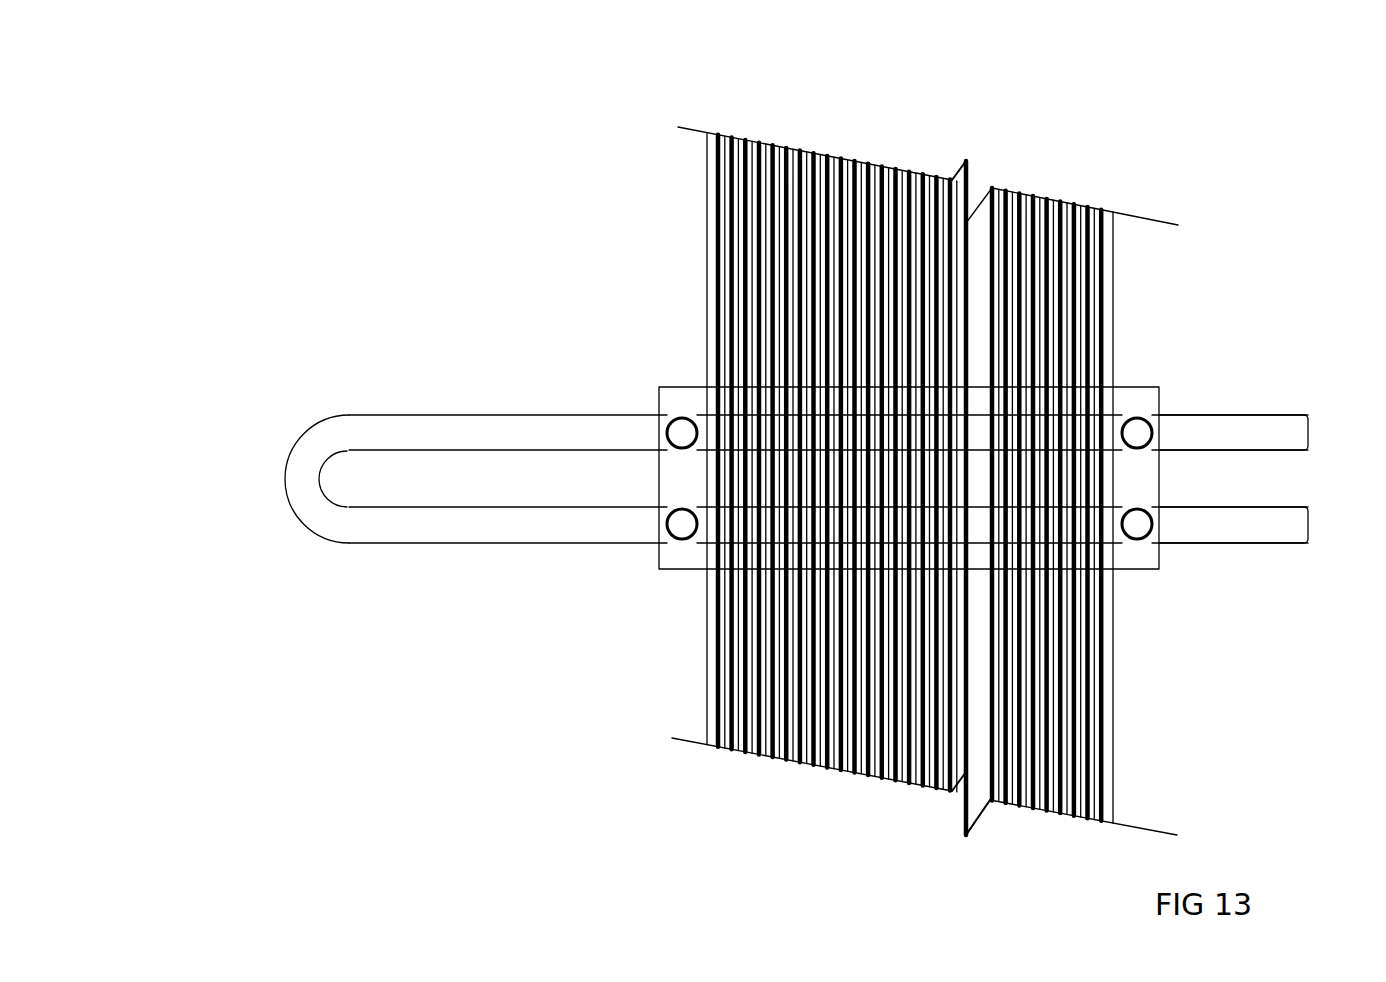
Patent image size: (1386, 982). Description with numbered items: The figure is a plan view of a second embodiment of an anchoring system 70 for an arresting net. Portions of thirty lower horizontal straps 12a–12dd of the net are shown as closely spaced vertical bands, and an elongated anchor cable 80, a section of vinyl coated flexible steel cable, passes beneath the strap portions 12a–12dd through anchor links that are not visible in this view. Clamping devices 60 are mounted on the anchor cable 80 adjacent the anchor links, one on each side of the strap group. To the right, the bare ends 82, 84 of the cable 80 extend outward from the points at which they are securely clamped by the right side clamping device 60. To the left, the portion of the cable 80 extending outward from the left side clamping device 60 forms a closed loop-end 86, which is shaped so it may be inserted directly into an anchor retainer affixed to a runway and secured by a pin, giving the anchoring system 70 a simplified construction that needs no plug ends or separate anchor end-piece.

The lower horizontal strap 12a is at (712, 133).
The lower horizontal strap 12dd is at (1108, 212).
The clamping device 60 is at (680, 387).
The anchoring system 70 is at (542, 629).
The anchor cable 80 is at (485, 415).
The bare end of cable 82 is at (1257, 415).
The bare end of cable 84 is at (1240, 543).
The loop-end 86 is at (298, 430).